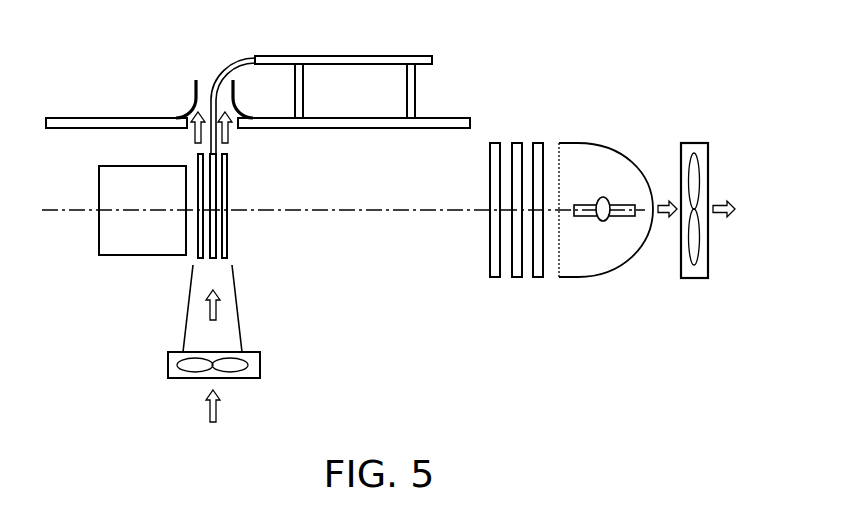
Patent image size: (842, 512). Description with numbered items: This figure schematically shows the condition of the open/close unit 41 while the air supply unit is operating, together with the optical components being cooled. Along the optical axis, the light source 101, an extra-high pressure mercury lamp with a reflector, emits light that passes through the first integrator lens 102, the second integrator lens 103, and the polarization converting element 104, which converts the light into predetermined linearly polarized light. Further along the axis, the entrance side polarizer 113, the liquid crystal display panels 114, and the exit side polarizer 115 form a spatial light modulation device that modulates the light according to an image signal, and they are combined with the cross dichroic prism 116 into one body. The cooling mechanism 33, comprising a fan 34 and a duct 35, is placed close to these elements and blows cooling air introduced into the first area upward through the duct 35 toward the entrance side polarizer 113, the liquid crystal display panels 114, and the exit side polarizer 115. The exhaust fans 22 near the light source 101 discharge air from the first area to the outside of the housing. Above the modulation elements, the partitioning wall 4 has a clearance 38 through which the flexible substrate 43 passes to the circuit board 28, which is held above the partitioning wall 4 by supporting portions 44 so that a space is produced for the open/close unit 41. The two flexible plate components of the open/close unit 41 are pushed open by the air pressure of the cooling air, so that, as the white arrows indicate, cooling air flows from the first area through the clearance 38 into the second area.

The partitioning wall 4 is at (70, 118).
The open/close unit 41 is at (194, 86).
The flexible substrate 43 is at (247, 60).
The circuit board 28 is at (403, 56).
The supporting portions 44 is at (304, 89).
The clearance 38 is at (194, 133).
The cross dichroic prism 116 is at (105, 240).
The exit side polarizer 115 is at (199, 257).
The liquid crystal display panels 114 is at (213, 261).
The entrance side polarizer 113 is at (229, 228).
The duct 35 is at (240, 296).
The cooling mechanism 33 is at (276, 349).
The fan 34 is at (253, 379).
The polarization converting element 104 is at (495, 278).
The second integrator lens 103 is at (517, 278).
The first integrator lens 102 is at (538, 278).
The light source 101 is at (610, 160).
The exhaust fans 22 is at (693, 143).